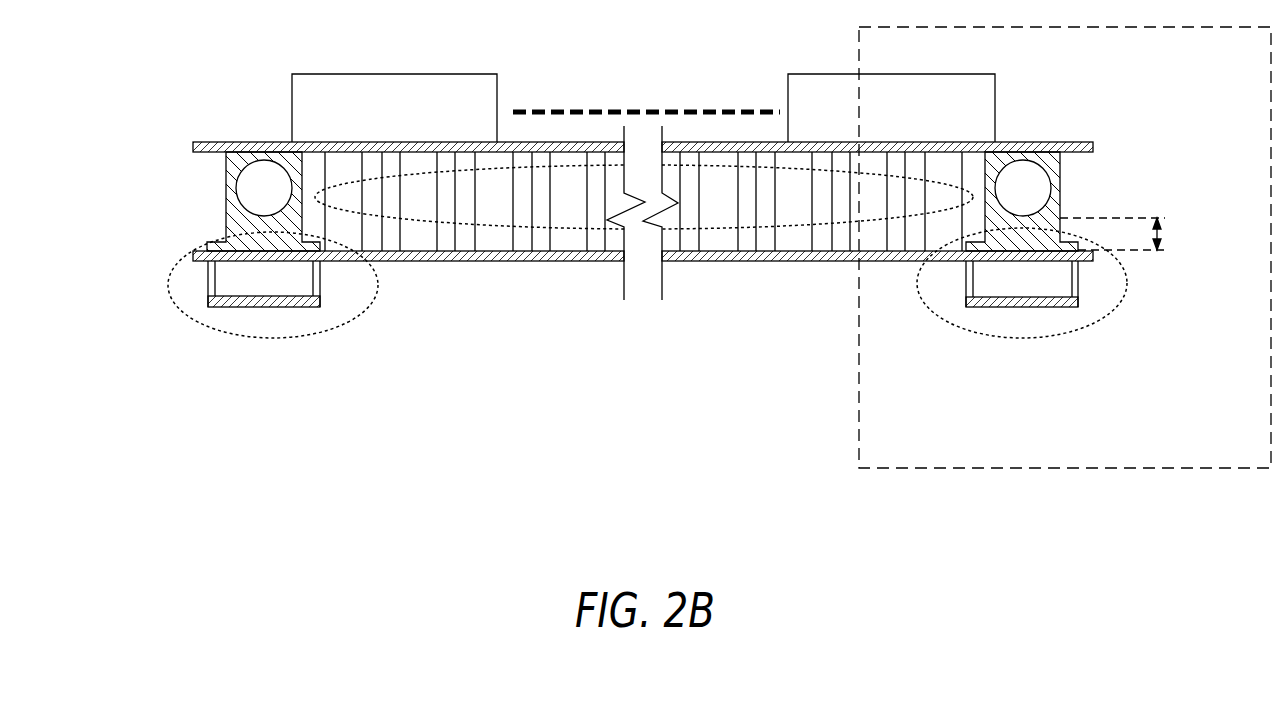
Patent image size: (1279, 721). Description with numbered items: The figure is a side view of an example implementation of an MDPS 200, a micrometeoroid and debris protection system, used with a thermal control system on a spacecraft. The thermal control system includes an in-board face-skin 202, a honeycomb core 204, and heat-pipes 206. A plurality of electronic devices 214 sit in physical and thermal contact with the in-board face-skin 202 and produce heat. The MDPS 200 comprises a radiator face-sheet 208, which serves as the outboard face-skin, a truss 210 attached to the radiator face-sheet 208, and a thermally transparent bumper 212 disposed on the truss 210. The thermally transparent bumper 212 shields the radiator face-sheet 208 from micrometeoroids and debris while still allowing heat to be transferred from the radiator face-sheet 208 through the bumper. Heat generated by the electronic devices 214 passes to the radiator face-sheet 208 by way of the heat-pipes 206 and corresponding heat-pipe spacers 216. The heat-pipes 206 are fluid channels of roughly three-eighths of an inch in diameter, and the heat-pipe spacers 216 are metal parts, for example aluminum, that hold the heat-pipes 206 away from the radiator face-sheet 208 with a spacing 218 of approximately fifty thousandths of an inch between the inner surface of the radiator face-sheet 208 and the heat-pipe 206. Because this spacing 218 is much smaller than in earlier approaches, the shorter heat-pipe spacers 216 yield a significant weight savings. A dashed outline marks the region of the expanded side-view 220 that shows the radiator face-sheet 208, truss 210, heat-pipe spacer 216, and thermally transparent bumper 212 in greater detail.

The MDPS 200 is at (262, 342).
The in-board face-skin 202 is at (1037, 142).
The honeycomb core 204 is at (718, 232).
The heat-pipe 206 is at (643, 188).
The radiator face-sheet 208 is at (417, 261).
The truss 210 is at (207, 273).
The thermally transparent bumper 212 is at (287, 307).
The electronic device 214 is at (643, 108).
The heat-pipe spacer 216 is at (233, 160).
The spacing 218 is at (1157, 234).
The expanded side-view 220 is at (1065, 247).